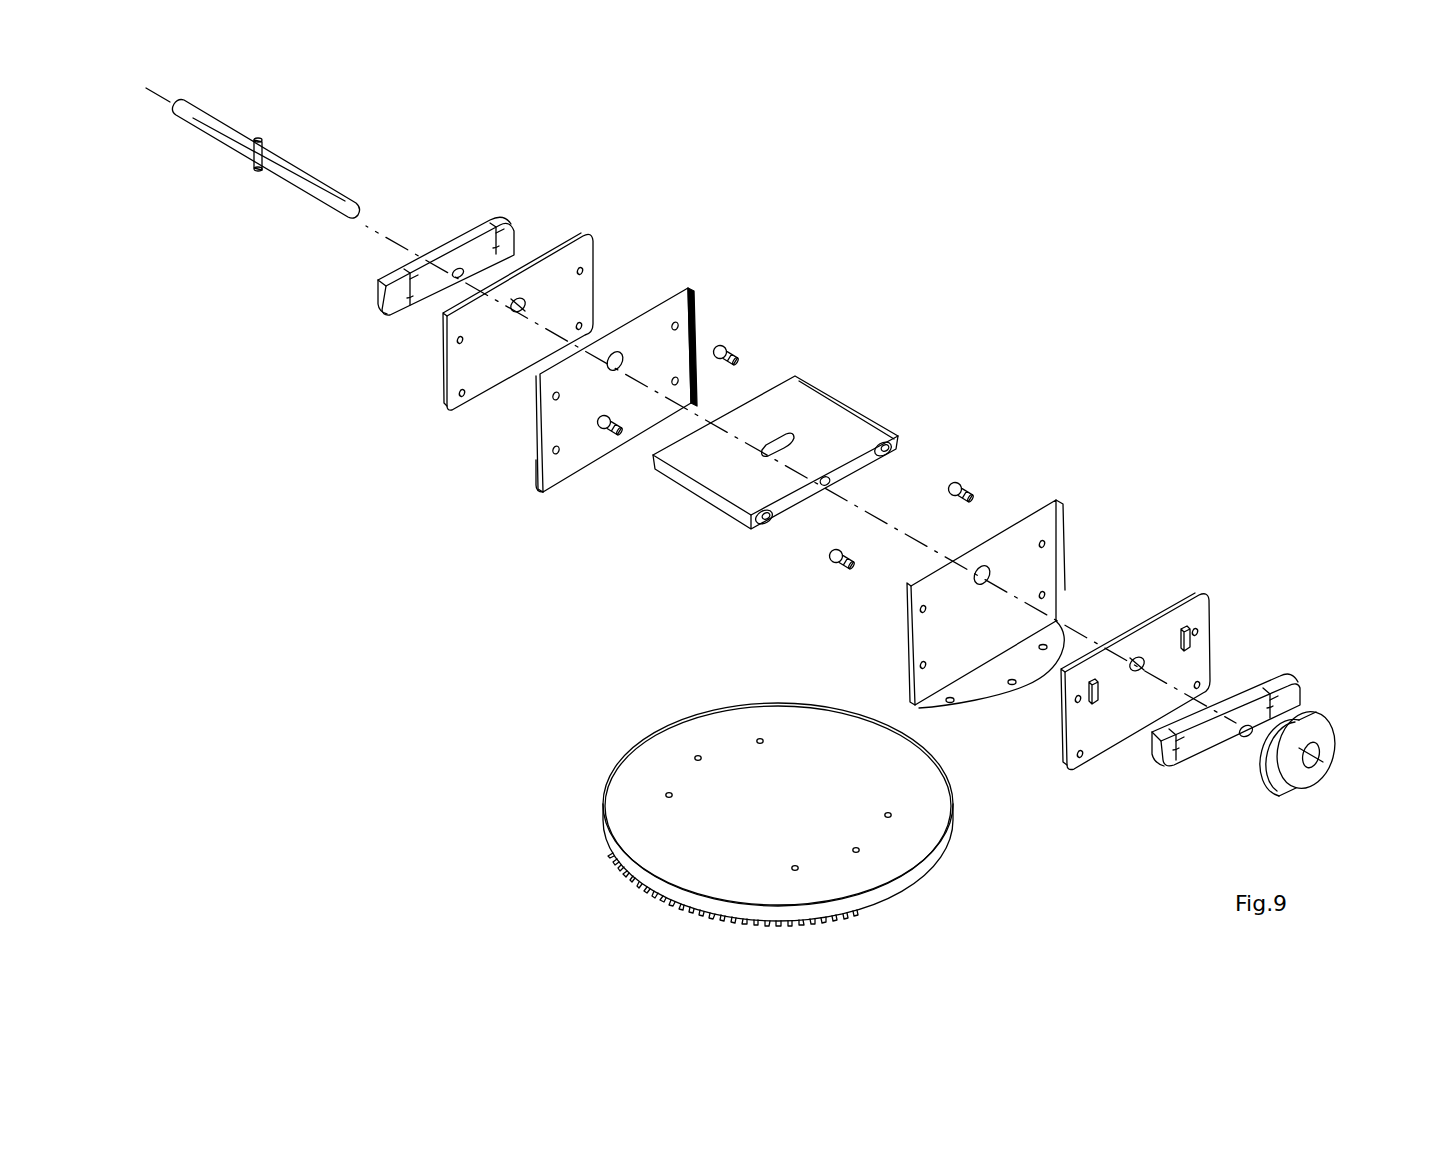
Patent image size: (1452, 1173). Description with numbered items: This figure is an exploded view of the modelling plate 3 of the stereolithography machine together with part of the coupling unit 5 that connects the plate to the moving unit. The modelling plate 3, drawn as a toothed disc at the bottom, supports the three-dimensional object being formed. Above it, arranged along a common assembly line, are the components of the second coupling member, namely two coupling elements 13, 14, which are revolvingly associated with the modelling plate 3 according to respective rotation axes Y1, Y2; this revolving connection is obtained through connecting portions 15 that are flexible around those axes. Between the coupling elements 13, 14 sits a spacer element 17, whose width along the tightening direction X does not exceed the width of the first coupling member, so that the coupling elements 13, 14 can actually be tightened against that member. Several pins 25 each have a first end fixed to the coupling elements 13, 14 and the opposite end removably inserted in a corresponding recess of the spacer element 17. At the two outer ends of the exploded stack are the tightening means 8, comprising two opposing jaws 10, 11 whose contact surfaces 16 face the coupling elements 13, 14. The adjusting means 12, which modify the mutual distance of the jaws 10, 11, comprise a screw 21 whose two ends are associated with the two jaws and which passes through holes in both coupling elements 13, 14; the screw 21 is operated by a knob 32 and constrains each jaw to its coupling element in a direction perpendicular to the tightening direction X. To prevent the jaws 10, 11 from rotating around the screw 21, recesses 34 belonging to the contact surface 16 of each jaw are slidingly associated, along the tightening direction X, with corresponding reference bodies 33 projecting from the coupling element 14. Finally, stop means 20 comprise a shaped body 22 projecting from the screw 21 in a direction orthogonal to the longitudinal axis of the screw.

The modelling plate 3 is at (668, 845).
The coupling unit 5 is at (1118, 316).
The tightening means 8 is at (861, 485).
The jaw 10 is at (461, 246).
The jaw 11 is at (1292, 681).
The adjusting means 12 is at (1342, 777).
The coupling element 13 is at (675, 312).
The coupling element 14 is at (1125, 639).
The connecting portion 15 is at (565, 470).
The contact surface 16 is at (522, 235).
The spacer element 17 is at (825, 415).
The stop means 20 is at (275, 148).
The screw 21 is at (330, 185).
The shaped body 22 is at (280, 134).
The pin 25 is at (613, 418).
The knob 32 is at (1300, 782).
The reference body 33 is at (1093, 712).
The recess 34 is at (494, 258).
The tightening direction X is at (1346, 784).
The rotation axis Y1 is at (577, 482).
The rotation axis Y2 is at (958, 682).